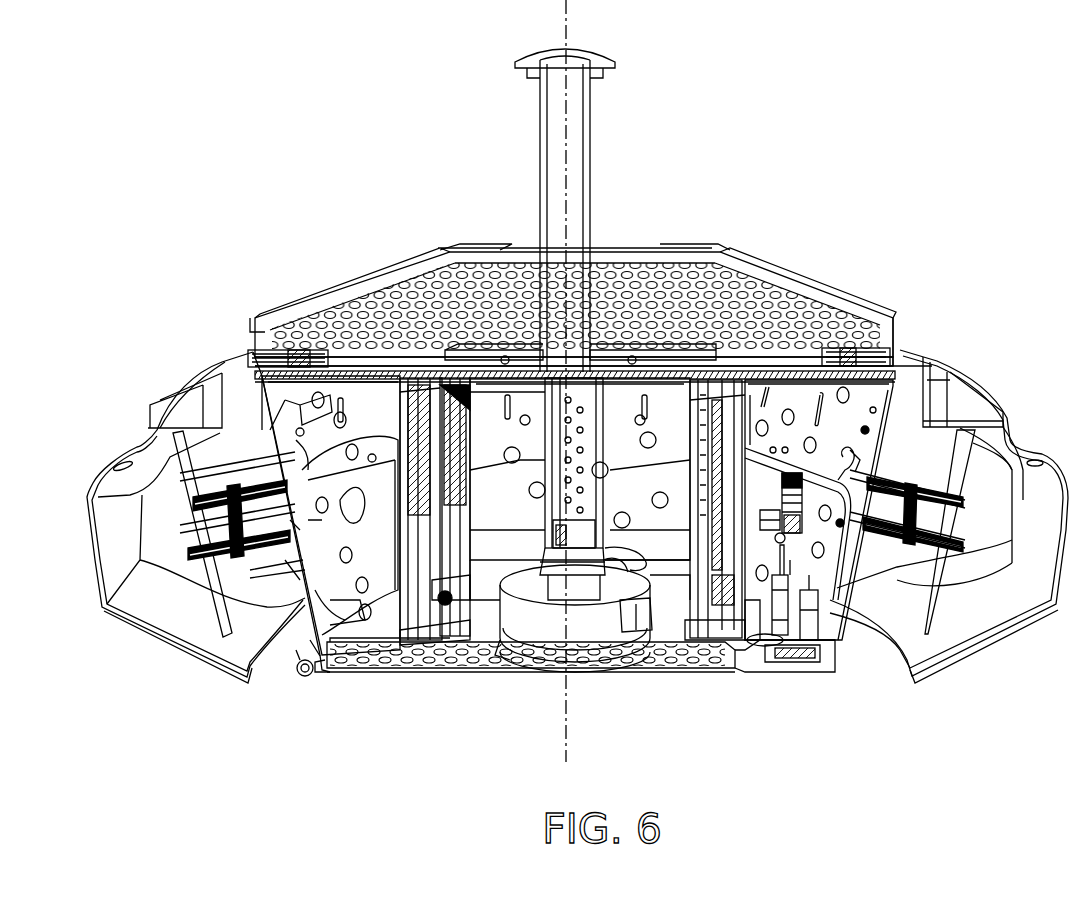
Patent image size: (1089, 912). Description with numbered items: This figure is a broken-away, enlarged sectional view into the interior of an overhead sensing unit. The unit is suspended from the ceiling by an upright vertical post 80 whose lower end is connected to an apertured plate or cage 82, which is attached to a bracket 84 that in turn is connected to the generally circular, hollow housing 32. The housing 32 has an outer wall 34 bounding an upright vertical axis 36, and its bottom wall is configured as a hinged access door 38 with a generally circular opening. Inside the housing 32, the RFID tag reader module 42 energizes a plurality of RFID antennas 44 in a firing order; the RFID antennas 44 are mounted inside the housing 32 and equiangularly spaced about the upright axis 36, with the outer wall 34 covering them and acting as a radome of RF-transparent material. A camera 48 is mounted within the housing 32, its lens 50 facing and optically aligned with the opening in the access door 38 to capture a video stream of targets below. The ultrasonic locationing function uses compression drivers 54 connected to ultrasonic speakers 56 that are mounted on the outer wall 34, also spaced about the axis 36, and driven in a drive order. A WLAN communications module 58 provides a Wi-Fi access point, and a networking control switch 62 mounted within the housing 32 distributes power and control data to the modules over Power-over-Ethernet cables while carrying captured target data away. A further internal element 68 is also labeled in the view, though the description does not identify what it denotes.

The housing 32 is at (953, 349).
The outer wall 34 is at (93, 550).
The upright axis 36 is at (570, 742).
The access door 38 is at (428, 660).
The RFID tag reader module 42 is at (733, 655).
The RFID antennas 44 is at (223, 592).
The camera 48 is at (540, 650).
The lens 50 is at (588, 660).
The compression drivers 54 is at (800, 662).
The ultrasonic speakers 56 is at (917, 667).
The WLAN communications module 58 is at (455, 650).
The networking control switch 62 is at (550, 447).
The vertical support bracket 68 is at (742, 403).
The post 80 is at (592, 158).
The apertured plate 82 is at (517, 420).
The bracket 84 is at (275, 342).